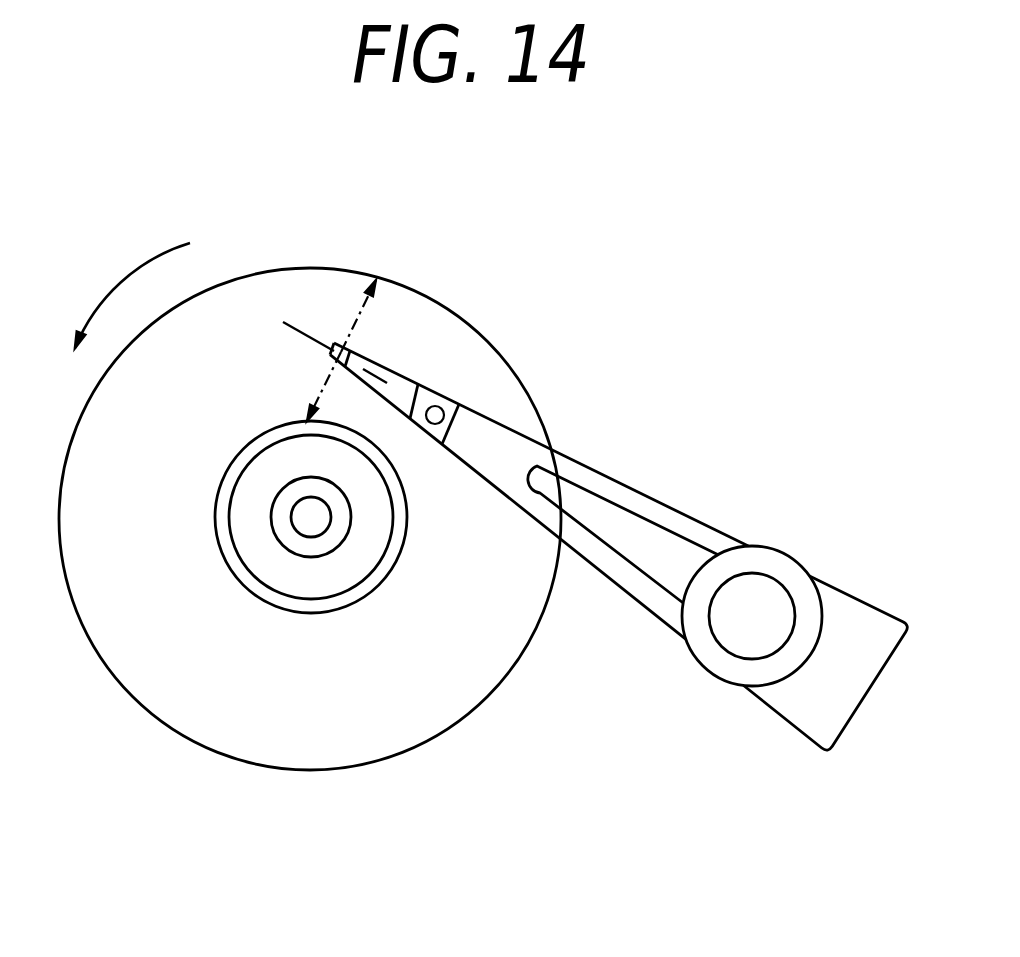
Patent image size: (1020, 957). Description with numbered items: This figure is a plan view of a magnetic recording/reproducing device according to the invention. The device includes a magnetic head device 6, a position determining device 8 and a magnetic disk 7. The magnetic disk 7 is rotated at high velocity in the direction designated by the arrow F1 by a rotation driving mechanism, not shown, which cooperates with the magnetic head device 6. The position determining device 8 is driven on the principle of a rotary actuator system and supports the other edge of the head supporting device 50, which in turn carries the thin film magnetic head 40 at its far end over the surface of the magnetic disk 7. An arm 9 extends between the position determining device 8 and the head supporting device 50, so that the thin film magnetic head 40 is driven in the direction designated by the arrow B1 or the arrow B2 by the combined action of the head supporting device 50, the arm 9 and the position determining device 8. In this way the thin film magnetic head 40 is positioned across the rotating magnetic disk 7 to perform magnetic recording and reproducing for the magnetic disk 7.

The magnetic head device 6 is at (618, 570).
The magnetic disk 7 is at (209, 737).
The position determining device 8 is at (790, 707).
The arm 9 is at (676, 522).
The thin film magnetic head 40 is at (355, 350).
The head supporting device 50 is at (401, 389).
The arrow F1 is at (128, 282).
The arrow B1 is at (352, 318).
The arrow B2 is at (322, 375).